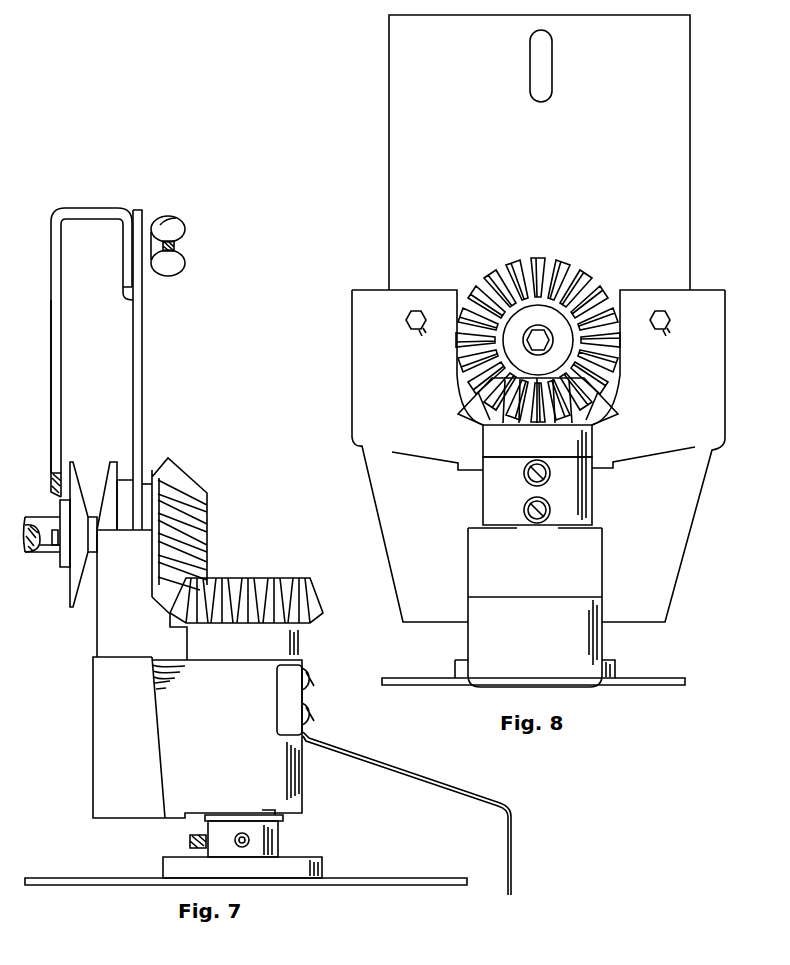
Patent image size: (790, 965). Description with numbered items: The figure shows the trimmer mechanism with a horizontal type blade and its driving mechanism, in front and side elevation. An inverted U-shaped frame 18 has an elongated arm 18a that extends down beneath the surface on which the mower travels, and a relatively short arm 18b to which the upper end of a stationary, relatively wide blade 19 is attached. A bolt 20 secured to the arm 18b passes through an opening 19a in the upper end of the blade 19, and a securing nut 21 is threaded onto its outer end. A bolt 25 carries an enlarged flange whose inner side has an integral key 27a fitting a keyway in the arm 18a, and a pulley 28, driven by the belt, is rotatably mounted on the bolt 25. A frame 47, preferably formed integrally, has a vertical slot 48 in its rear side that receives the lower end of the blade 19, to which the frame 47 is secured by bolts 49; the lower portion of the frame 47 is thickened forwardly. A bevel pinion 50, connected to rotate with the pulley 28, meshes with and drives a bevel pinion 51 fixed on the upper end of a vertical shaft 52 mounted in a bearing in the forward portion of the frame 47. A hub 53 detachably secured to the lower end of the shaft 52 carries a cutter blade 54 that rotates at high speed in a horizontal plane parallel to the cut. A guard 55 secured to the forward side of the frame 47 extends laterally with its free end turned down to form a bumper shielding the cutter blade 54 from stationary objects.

In FIG. 7, the frame 18 is at (40, 248).
In FIG. 7, the elongated arm 18a is at (52, 402).
In FIG. 7, the short arm 18b is at (127, 294).
In FIG. 7, the stationary blade 19 is at (143, 386).
In FIG. 8, the stationary blade 19 is at (692, 191).
In FIG. 8, the opening 19a is at (552, 66).
In FIG. 7, the bolt 20 is at (180, 245).
In FIG. 7, the securing nut 21 is at (175, 219).
In FIG. 7, the bolt 25 is at (35, 521).
In FIG. 7, the key 27a is at (58, 548).
In FIG. 7, the pulley 28 is at (112, 467).
In FIG. 7, the frame 47 is at (92, 692).
In FIG. 8, the frame 47 is at (727, 410).
In FIG. 7, the vertical slot 48 is at (143, 484).
In FIG. 8, the bolts 49 is at (408, 313).
In FIG. 7, the bevel pinion 50 is at (204, 496).
In FIG. 8, the bevel pinion 50 is at (590, 283).
In FIG. 7, the bevel pinion 51 is at (298, 595).
In FIG. 8, the bevel pinion 51 is at (615, 413).
In FIG. 7, the vertical shaft 52 is at (292, 824).
In FIG. 7, the hub 53 is at (296, 849).
In FIG. 7, the cutter blade 54 is at (388, 886).
In FIG. 8, the cutter blade 54 is at (674, 678).
In FIG. 7, the guard 55 is at (422, 776).
In FIG. 8, the guard 55 is at (476, 630).